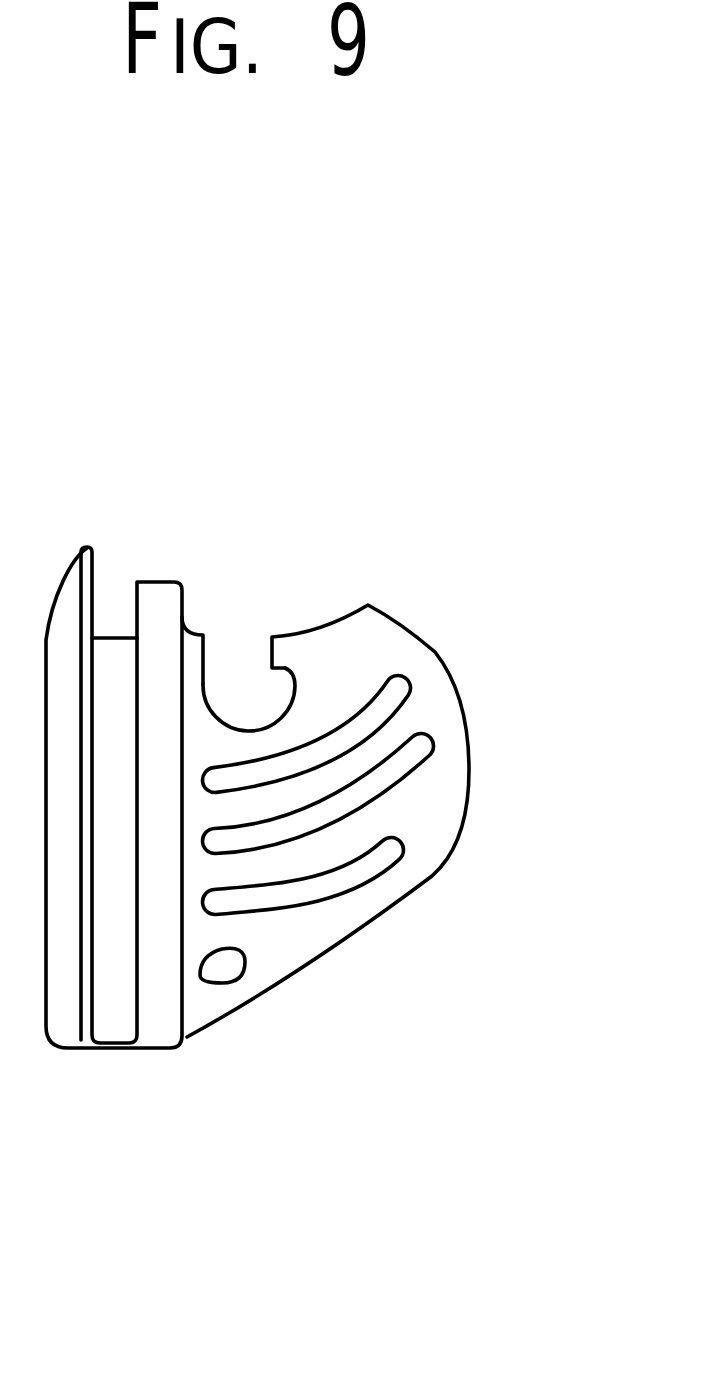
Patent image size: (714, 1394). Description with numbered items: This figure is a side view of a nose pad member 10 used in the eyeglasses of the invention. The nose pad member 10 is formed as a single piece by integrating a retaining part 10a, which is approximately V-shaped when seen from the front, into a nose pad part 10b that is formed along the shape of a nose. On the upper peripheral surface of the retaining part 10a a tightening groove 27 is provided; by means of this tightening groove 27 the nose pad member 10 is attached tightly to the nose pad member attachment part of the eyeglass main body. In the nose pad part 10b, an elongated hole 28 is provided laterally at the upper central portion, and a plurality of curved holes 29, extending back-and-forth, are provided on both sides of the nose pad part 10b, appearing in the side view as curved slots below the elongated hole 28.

The nose pad member 10 is at (333, 856).
The retaining part 10a is at (113, 1050).
The nose pad part 10b is at (401, 826).
The tightening groove 27 is at (115, 647).
The elongated hole 28 is at (241, 683).
The curved holes 29 is at (388, 698).